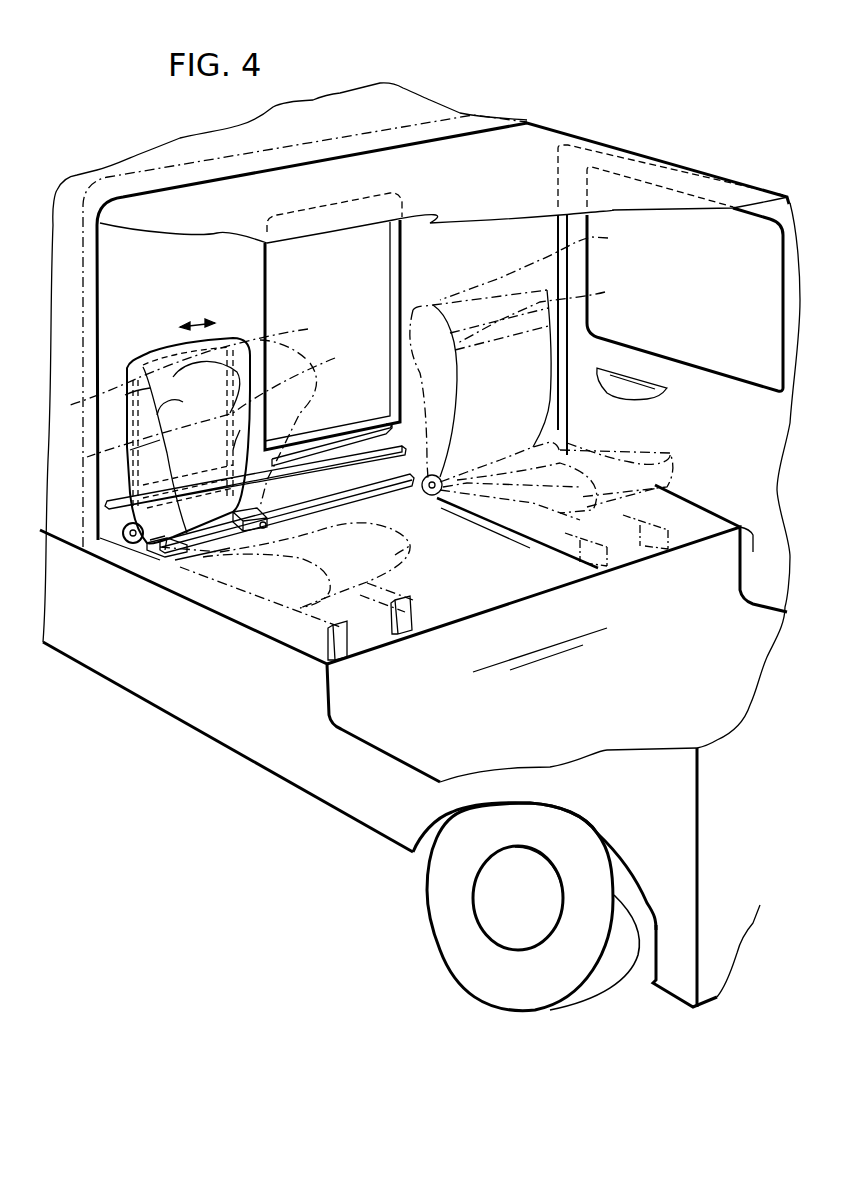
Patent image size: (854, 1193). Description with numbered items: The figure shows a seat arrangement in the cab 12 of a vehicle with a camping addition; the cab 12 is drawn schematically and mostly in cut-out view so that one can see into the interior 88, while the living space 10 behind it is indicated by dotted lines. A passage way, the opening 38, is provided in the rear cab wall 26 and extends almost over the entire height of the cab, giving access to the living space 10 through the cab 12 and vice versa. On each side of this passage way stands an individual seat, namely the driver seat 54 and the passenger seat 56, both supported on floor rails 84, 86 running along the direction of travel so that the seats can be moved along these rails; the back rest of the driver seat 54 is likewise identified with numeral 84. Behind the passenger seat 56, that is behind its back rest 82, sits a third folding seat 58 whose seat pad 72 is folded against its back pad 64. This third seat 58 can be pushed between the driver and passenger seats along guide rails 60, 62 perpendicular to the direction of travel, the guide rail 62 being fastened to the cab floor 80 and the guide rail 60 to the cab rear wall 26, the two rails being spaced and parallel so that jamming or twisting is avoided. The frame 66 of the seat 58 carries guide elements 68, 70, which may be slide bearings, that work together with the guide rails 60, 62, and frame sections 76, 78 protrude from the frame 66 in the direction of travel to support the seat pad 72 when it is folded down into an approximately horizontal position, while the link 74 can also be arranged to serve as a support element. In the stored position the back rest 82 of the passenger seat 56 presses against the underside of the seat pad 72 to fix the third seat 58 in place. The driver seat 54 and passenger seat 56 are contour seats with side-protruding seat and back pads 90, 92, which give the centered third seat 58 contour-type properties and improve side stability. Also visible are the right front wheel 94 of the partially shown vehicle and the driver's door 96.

The living space 10 is at (413, 93).
The cab 12 is at (626, 135).
The rear cab wall 26 is at (113, 310).
The opening 38 is at (270, 314).
The driver seat 54 is at (560, 470).
The passenger seat 56 is at (270, 583).
The folding seat 58 is at (158, 348).
The guide rail 60 is at (382, 428).
The guide rail 62 is at (388, 492).
The back pad 64 is at (220, 340).
The frame 66 is at (112, 403).
The guide element 68 is at (247, 432).
The guide element 70 is at (262, 530).
The seat pad 72 is at (160, 440).
The link 74 is at (133, 547).
The frame section 76 is at (141, 560).
The frame section 78 is at (257, 507).
The cab floor 80 is at (487, 596).
The back rest 82 is at (201, 362).
The floor rail 84 is at (338, 643).
The floor rail 86 is at (403, 638).
The interior 88 is at (465, 291).
The seat pad 90 is at (402, 549).
The back pad 92 is at (358, 392).
The right front wheel 94 is at (437, 882).
The driver's door 96 is at (663, 368).